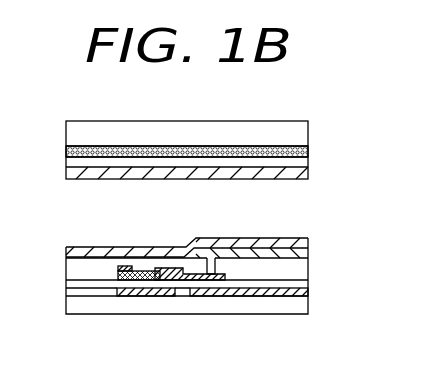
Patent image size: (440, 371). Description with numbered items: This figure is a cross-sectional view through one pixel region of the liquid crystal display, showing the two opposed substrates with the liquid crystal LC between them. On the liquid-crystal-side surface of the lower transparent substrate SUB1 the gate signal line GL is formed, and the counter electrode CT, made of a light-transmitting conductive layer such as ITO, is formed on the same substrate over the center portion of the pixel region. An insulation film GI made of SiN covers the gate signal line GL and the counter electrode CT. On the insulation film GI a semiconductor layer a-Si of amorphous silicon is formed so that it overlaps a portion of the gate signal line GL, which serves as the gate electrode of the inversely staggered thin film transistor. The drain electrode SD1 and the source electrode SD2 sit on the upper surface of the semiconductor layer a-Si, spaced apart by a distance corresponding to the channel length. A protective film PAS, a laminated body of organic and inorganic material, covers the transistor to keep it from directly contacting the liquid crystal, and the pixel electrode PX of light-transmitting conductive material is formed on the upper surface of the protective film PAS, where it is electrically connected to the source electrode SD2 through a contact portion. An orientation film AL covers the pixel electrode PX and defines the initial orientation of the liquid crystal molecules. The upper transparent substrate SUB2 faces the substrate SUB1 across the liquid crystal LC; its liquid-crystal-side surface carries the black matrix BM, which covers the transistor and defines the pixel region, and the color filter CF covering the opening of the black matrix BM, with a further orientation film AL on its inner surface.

The transparent substrate SUB2 is at (303, 130).
The black matrix BM is at (303, 148).
The color filter CF is at (303, 162).
The orientation film AL is at (305, 176).
The liquid crystal LC is at (298, 210).
The pixel electrode PX is at (238, 250).
The protective film PAS is at (305, 259).
The insulation film GI is at (306, 283).
The transparent substrate SUB1 is at (305, 305).
The drain electrode SD1 is at (118, 269).
The source electrode SD2 is at (184, 281).
The semiconductor layer a-Si is at (119, 276).
The gate signal line GL is at (126, 297).
The counter electrode CT is at (266, 294).